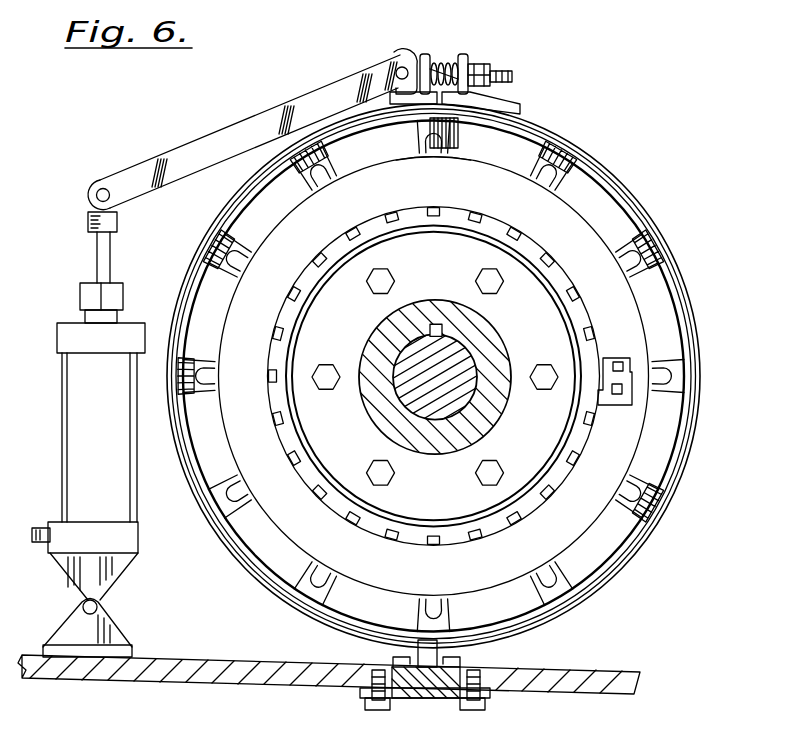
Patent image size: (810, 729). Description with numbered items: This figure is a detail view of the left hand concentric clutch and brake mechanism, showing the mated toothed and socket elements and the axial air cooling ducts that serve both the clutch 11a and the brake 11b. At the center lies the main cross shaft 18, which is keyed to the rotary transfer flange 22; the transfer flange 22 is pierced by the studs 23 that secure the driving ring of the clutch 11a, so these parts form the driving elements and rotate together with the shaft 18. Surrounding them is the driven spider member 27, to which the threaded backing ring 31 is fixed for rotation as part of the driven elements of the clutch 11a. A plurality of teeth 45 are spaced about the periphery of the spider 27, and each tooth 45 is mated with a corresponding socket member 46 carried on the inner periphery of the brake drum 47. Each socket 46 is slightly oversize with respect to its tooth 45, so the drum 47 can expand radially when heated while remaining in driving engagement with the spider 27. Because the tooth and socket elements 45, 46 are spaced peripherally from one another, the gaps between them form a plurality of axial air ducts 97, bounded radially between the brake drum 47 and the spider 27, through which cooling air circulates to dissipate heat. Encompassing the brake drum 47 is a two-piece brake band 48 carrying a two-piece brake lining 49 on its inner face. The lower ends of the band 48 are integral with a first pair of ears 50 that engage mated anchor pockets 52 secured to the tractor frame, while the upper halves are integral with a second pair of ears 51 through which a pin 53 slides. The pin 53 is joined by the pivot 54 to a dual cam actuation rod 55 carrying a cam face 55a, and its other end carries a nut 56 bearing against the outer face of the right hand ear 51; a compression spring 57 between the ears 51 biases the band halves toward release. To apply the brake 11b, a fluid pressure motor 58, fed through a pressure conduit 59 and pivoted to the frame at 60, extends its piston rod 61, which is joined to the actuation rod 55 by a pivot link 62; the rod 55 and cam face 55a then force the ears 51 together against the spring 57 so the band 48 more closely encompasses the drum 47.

The clutch portion 11a is at (598, 323).
The brake portion 11b is at (670, 340).
The main cross shaft 18 is at (393, 399).
The rotary transfer flange 22 is at (395, 428).
The studs 23 is at (480, 477).
The driven spider member 27 is at (388, 172).
The threaded backing ring 31 is at (582, 440).
The teeth 45 is at (543, 180).
The socket member 46 is at (635, 250).
The brake drum 47 is at (692, 304).
The two-piece brake band 48 is at (566, 131).
The two-piece brake lining 49 is at (620, 190).
The first pair of ears 50 is at (395, 661).
The second pair of ears 51 is at (430, 52).
The anchor pockets 52 is at (425, 690).
The pin 53 is at (515, 78).
The pivot 54 is at (393, 66).
The dual cam actuation rod 55 is at (318, 100).
The cam face 55a is at (402, 67).
The nut 56 is at (490, 73).
The compression spring 57 is at (446, 63).
The fluid pressure motor 58 is at (65, 432).
The pressure conduit 59 is at (38, 528).
The pivot 60 is at (100, 606).
The piston rod 61 is at (100, 255).
The pivot link 62 is at (103, 190).
The axial air ducts 97 is at (258, 215).